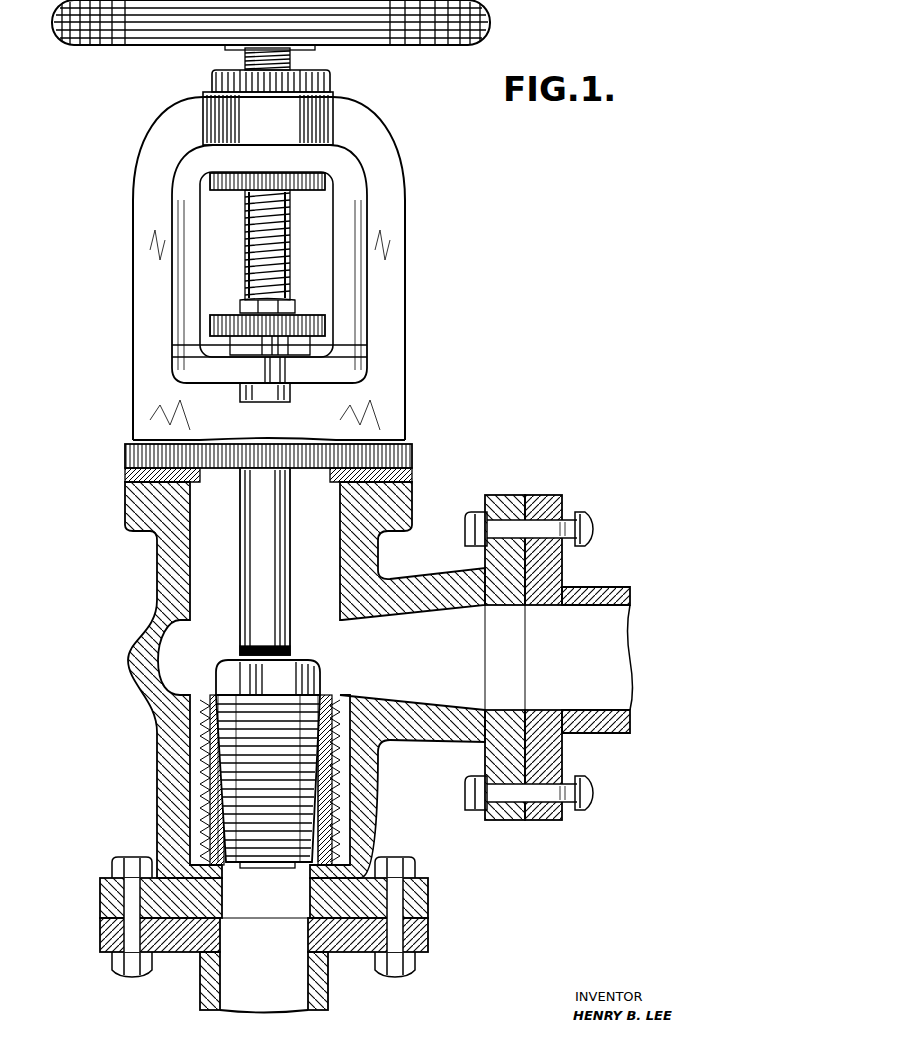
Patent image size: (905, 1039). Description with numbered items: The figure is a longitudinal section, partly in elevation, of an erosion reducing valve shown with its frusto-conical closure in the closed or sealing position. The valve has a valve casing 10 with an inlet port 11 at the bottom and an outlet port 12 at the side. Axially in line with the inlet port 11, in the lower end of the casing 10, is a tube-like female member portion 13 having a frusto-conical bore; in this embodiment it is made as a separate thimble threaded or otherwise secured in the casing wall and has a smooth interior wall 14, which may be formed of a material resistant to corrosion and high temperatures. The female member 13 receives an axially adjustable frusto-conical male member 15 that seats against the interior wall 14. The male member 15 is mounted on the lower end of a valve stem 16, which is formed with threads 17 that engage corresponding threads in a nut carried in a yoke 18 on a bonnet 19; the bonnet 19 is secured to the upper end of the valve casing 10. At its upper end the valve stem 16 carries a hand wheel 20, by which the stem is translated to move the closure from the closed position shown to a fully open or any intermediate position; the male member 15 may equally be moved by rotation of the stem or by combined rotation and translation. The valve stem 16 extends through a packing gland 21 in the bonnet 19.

The valve casing 10 is at (140, 665).
The inlet port 11 is at (222, 898).
The outlet port 12 is at (495, 708).
The tube-like female member portion 13 is at (195, 805).
The smooth interior wall 14 is at (218, 772).
The frusto-conical male member 15 is at (312, 797).
The valve stem 16 is at (262, 540).
The threads 17 is at (245, 55).
The yoke 18 is at (373, 197).
The bonnet 19 is at (385, 418).
The hand wheel 20 is at (428, 47).
The packing gland 21 is at (300, 347).